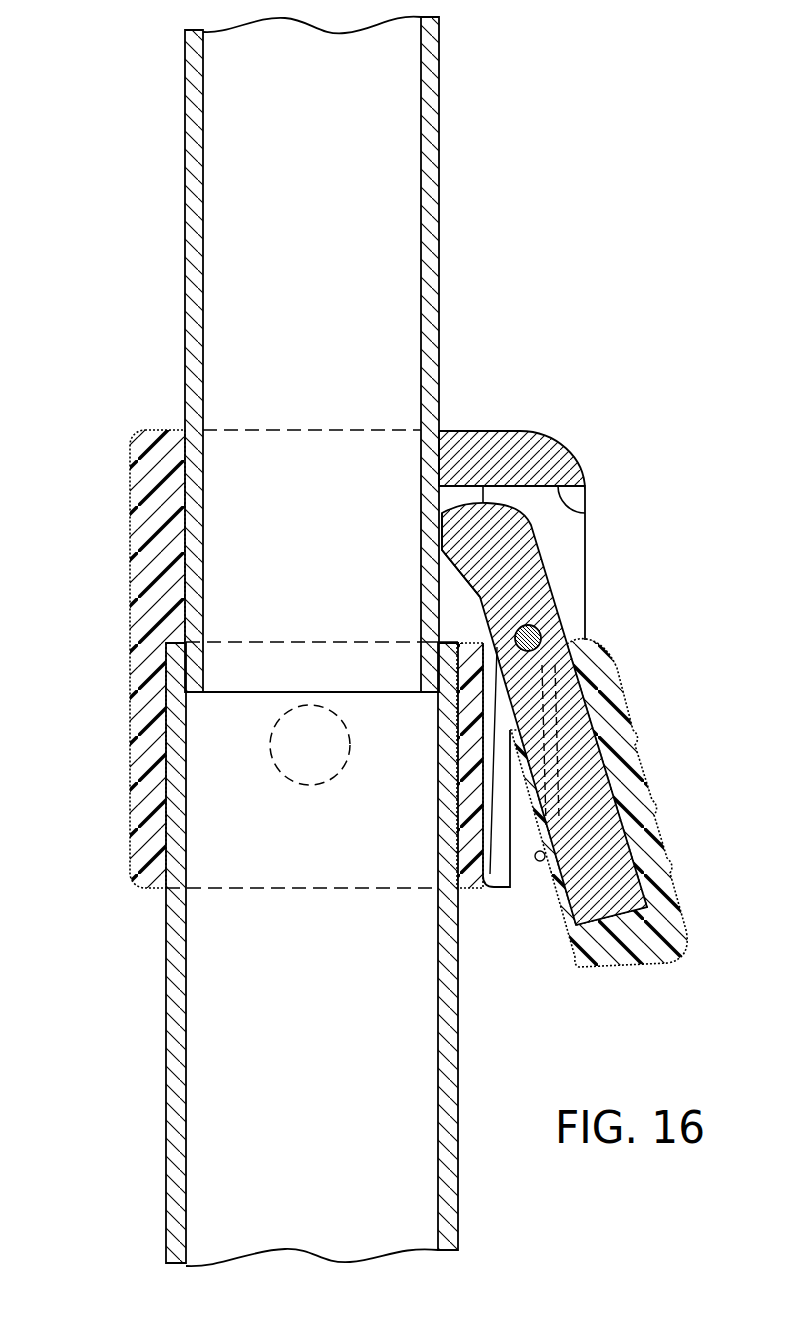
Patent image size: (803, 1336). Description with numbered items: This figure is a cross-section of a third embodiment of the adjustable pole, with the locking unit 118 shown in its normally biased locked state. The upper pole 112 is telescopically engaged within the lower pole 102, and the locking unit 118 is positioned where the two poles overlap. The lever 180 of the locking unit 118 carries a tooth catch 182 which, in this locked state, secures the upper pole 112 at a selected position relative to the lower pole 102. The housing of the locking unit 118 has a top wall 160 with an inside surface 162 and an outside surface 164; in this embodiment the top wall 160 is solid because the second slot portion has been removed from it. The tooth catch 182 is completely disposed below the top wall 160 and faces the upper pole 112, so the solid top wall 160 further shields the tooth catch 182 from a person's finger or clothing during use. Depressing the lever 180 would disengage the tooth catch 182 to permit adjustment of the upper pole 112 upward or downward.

The lower pole 102 is at (158, 1080).
The upper pole 112 is at (177, 207).
The locking unit 118 is at (122, 693).
The top wall 160 is at (519, 422).
The inside surface 162 is at (588, 512).
The outside surface 164 is at (490, 430).
The lever 180 is at (553, 588).
The tooth catch 182 is at (442, 515).